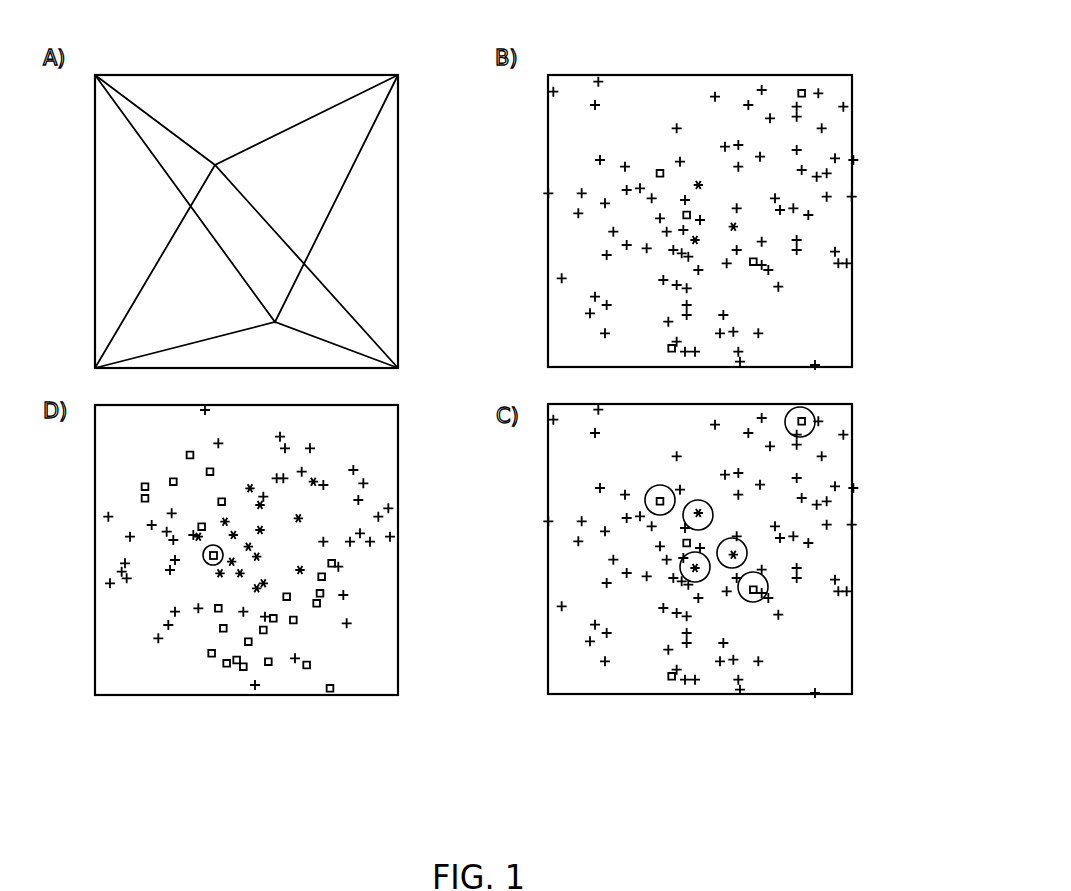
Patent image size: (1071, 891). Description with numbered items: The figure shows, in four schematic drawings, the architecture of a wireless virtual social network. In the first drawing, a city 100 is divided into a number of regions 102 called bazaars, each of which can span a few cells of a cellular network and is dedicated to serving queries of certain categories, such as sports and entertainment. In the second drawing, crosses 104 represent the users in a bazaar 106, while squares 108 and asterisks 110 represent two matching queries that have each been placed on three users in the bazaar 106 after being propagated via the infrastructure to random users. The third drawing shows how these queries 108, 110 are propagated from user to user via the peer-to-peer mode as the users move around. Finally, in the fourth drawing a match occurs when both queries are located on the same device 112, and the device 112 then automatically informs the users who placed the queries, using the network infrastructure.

The city 100 is at (203, 113).
The region (bazaar) 102 is at (350, 128).
The cross 104 is at (690, 162).
The bazaar 106 is at (833, 222).
The square 108 is at (657, 163).
The asterisk 110 is at (729, 232).
The device 112 is at (203, 562).